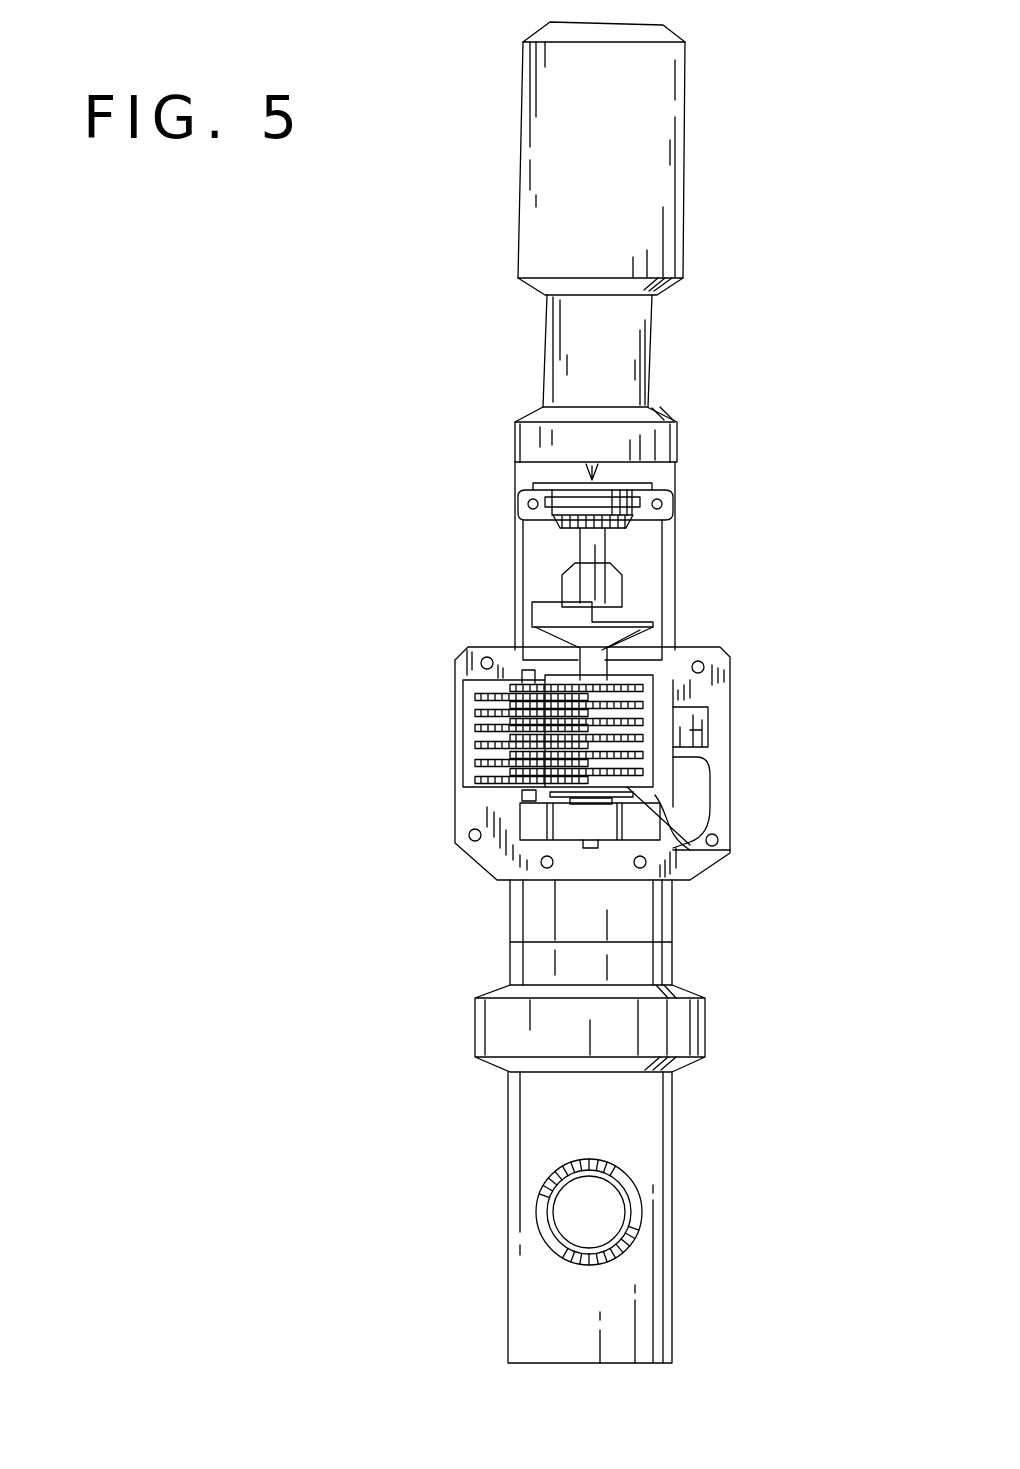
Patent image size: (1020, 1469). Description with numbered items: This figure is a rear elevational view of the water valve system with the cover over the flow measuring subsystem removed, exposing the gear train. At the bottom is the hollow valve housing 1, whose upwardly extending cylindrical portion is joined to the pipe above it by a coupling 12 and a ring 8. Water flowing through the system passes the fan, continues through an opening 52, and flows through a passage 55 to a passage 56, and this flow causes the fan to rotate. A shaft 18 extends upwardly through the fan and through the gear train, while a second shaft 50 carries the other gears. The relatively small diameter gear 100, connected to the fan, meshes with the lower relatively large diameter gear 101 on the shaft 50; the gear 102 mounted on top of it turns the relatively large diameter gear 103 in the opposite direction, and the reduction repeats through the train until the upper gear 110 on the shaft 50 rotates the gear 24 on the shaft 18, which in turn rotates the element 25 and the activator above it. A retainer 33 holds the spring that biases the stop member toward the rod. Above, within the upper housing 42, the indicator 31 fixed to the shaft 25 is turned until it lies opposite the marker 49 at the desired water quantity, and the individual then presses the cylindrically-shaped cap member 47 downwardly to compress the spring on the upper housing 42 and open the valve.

The hollow valve housing 1 is at (508, 1172).
The ring 8 is at (703, 1042).
The coupling 12 is at (673, 967).
The shaft 18 is at (585, 848).
The gear 24 is at (655, 680).
The rotatable shaft (element) 25 is at (597, 645).
The indicator 31 is at (637, 482).
The retainer 33 is at (622, 590).
The upper housing 42 is at (547, 337).
The cylindrically-shaped cap member 47 is at (685, 112).
The marker 49 is at (582, 468).
The second shaft 50 is at (520, 794).
The opening 52 is at (660, 840).
The passage 55 is at (690, 807).
The passage 56 is at (700, 718).
The relatively small diameter gear 100 is at (700, 843).
The relatively large diameter gear 101 is at (473, 780).
The gear 102 is at (473, 773).
The relatively large diameter gear 103 is at (630, 792).
The upper gear 110 is at (458, 708).